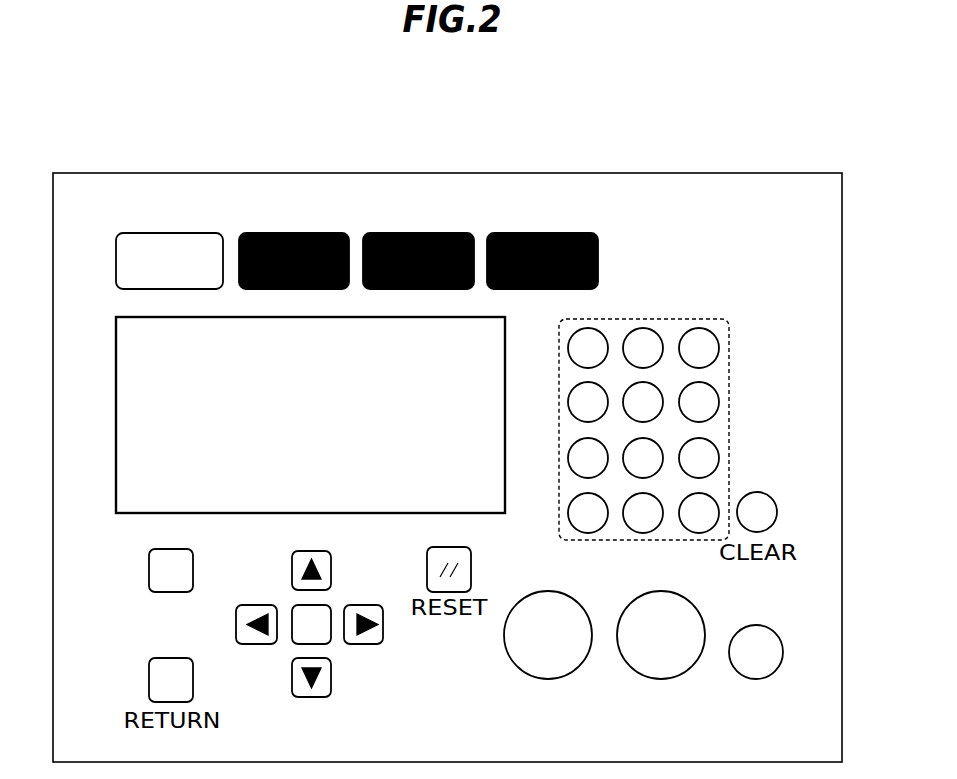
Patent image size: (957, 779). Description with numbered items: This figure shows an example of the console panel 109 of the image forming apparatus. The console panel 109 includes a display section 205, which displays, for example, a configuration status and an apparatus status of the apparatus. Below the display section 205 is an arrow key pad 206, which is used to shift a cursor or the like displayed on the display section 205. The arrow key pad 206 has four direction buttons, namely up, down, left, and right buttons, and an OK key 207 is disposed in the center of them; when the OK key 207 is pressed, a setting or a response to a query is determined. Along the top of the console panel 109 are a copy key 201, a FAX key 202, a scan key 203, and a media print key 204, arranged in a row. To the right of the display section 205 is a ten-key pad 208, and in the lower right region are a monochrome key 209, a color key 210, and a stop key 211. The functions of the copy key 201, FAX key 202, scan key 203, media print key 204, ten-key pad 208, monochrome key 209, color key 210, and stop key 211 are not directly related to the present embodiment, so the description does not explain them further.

The console panel 109 is at (446, 173).
The copy key 201 is at (167, 234).
The FAX key 202 is at (294, 234).
The scan key 203 is at (419, 234).
The media print key 204 is at (545, 234).
The display section 205 is at (116, 413).
The arrow key pad 206 is at (331, 680).
The OK key 207 is at (330, 612).
The ten-key pad 208 is at (644, 319).
The monochrome key 209 is at (546, 592).
The color key 210 is at (659, 592).
The stop key 211 is at (753, 625).